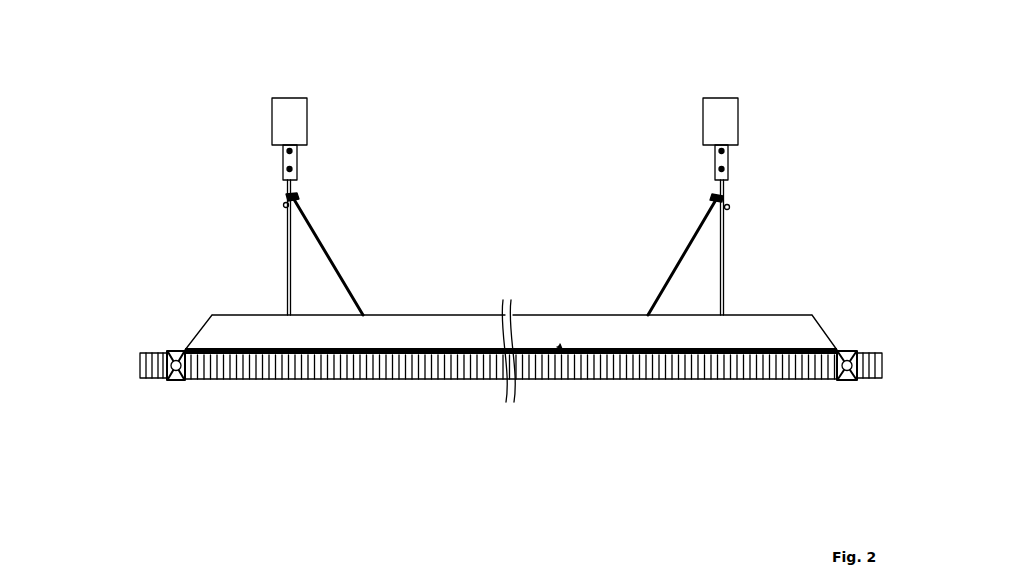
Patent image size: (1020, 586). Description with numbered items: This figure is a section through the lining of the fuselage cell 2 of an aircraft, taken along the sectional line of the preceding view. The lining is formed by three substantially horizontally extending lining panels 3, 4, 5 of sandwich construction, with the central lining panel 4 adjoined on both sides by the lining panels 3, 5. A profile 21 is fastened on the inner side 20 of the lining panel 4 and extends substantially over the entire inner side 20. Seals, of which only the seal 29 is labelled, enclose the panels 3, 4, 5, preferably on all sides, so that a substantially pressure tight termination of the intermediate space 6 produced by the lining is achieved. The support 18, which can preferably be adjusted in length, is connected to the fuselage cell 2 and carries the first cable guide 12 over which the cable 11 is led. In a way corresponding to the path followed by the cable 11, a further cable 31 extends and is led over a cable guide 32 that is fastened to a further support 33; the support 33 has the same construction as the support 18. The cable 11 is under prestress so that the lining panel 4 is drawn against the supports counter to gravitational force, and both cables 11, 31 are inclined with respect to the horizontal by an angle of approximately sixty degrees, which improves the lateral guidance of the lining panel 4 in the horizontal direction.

The fuselage cell 2 is at (289, 112).
The lining panel 3 is at (138, 368).
The lining panel 4 is at (462, 365).
The lining panel 5 is at (865, 368).
The intermediate space 6 is at (815, 279).
The cable 11 is at (680, 258).
The first cable guide 12 is at (712, 198).
The support 18 is at (727, 242).
The inner side 20 is at (561, 347).
The profile 21 is at (233, 335).
The seal 29 is at (170, 353).
The further cable 31 is at (343, 267).
The cable guide 32 is at (303, 198).
The further support 33 is at (285, 263).